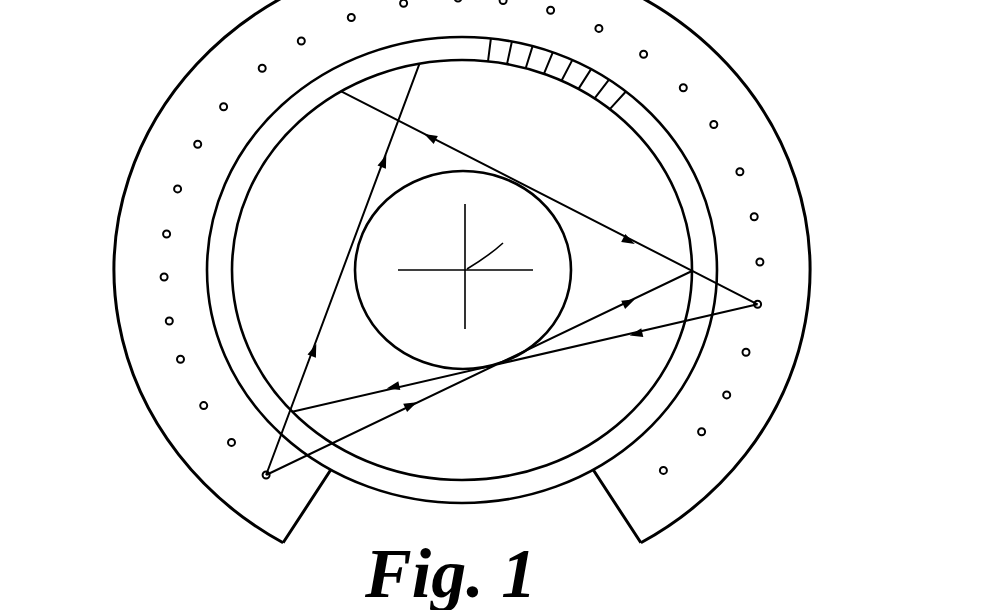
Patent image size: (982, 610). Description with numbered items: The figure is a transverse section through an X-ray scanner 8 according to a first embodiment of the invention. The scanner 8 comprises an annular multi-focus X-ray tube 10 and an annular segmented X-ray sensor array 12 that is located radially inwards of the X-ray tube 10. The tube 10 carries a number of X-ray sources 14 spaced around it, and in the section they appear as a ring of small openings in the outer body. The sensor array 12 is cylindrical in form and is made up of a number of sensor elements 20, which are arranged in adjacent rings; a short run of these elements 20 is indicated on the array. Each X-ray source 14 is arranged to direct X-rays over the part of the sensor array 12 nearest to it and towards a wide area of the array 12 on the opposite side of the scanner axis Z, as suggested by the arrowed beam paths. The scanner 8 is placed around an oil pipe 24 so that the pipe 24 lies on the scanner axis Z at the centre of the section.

The X-ray scanner 8 is at (116, 127).
The annular multi-focus X-ray tube 10 is at (721, 446).
The annular segmented X-ray sensor array 12 is at (635, 107).
The X-ray sources 14 is at (744, 172).
The sensor elements 20 is at (532, 62).
The oil pipe 24 is at (367, 325).